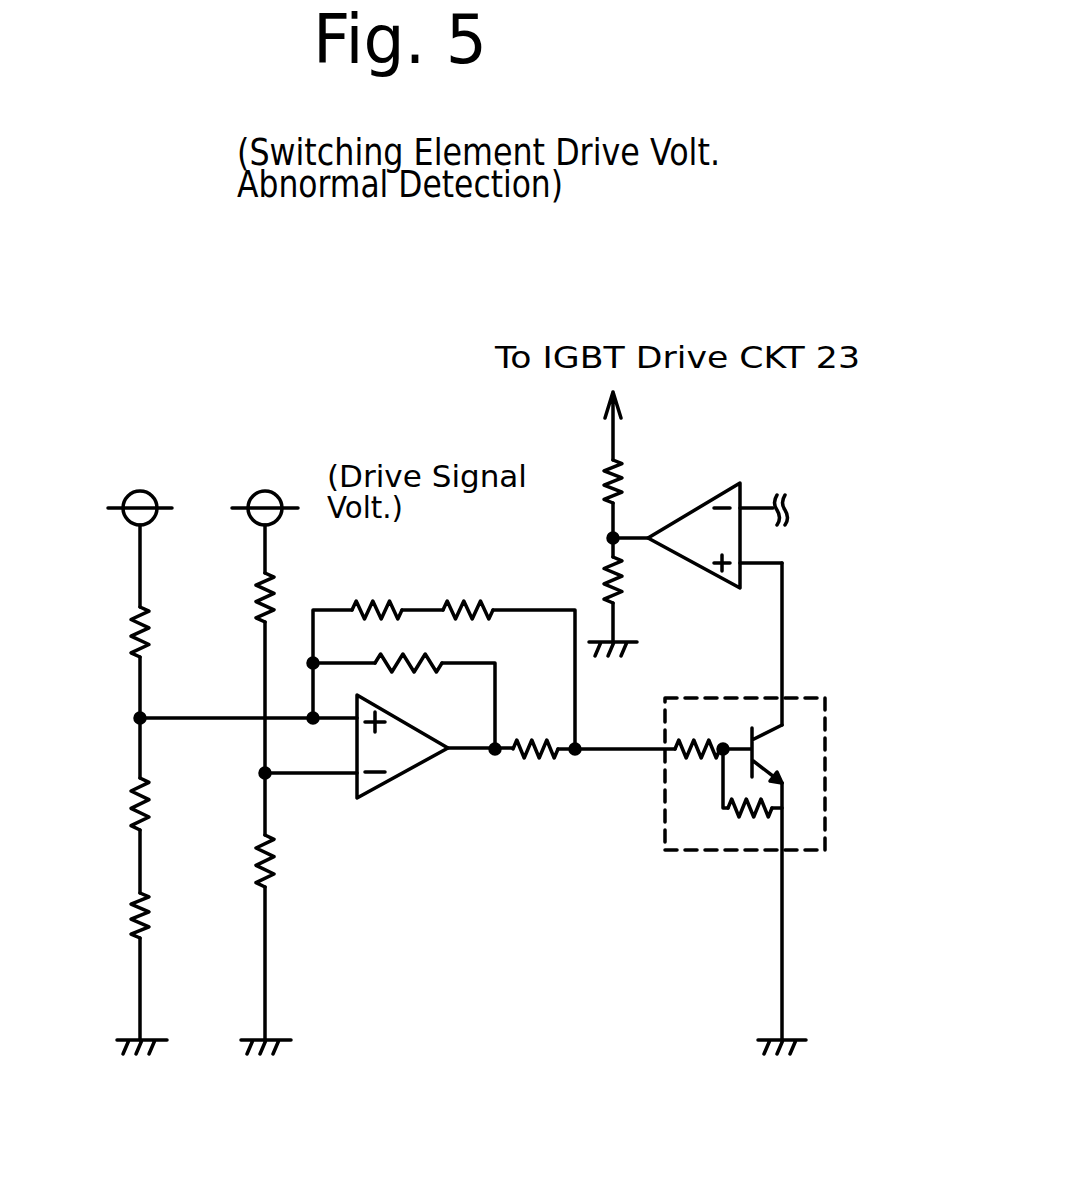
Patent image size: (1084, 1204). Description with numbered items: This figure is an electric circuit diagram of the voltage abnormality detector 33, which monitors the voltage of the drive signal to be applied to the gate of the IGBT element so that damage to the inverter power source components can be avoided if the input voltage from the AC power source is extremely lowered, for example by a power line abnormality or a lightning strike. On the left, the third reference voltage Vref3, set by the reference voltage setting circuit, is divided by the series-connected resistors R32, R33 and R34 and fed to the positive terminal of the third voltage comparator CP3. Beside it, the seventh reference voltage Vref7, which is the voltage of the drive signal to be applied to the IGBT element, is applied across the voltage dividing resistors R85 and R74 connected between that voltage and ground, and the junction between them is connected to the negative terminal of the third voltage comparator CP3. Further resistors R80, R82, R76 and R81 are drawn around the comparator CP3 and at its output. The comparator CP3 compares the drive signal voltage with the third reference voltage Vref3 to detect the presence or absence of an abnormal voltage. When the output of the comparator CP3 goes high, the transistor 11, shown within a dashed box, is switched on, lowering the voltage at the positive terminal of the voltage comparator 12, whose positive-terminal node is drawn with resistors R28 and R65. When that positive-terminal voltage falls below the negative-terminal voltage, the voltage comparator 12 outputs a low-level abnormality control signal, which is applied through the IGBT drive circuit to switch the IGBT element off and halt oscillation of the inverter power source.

The transistor 11 is at (827, 793).
The voltage comparator 12 is at (780, 550).
The voltage abnormality detector 33 is at (847, 635).
The third voltage comparator CP3 is at (399, 790).
The resistor R28 is at (582, 479).
The resistor R32 is at (107, 632).
The resistor R33 is at (108, 806).
The resistor R34 is at (108, 912).
The resistor R65 is at (643, 583).
The resistor R74 is at (232, 859).
The resistor R76 is at (410, 642).
The resistor R80 is at (382, 585).
The resistor R81 is at (535, 773).
The resistor R82 is at (470, 585).
The resistor R85 is at (232, 600).
The third reference voltage Vref3 is at (137, 485).
The seventh reference voltage Vref7 is at (268, 485).